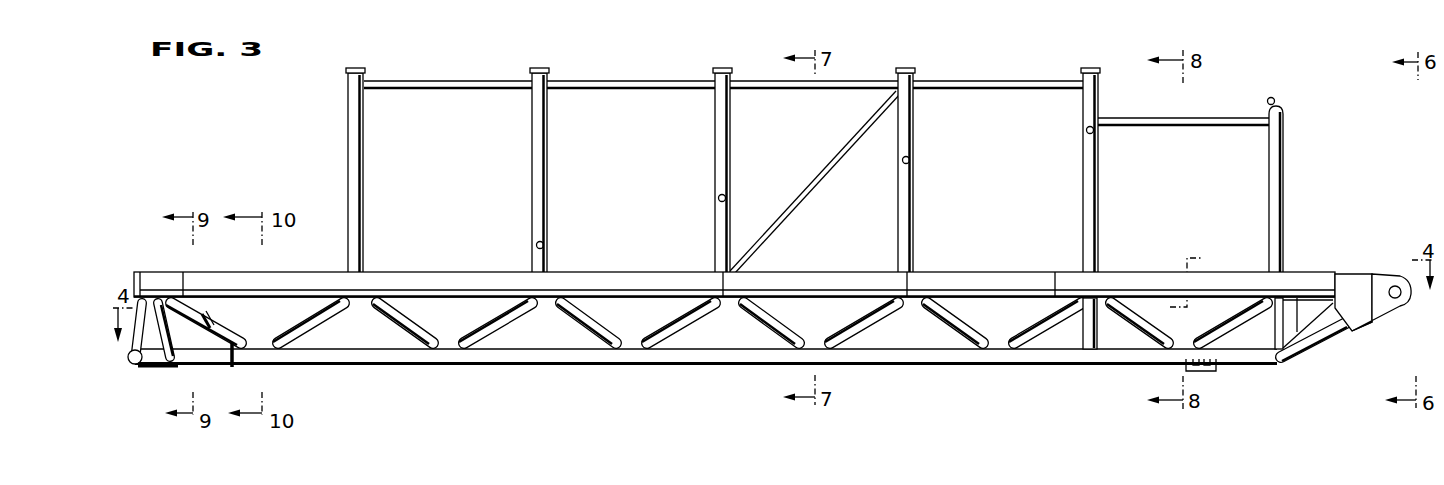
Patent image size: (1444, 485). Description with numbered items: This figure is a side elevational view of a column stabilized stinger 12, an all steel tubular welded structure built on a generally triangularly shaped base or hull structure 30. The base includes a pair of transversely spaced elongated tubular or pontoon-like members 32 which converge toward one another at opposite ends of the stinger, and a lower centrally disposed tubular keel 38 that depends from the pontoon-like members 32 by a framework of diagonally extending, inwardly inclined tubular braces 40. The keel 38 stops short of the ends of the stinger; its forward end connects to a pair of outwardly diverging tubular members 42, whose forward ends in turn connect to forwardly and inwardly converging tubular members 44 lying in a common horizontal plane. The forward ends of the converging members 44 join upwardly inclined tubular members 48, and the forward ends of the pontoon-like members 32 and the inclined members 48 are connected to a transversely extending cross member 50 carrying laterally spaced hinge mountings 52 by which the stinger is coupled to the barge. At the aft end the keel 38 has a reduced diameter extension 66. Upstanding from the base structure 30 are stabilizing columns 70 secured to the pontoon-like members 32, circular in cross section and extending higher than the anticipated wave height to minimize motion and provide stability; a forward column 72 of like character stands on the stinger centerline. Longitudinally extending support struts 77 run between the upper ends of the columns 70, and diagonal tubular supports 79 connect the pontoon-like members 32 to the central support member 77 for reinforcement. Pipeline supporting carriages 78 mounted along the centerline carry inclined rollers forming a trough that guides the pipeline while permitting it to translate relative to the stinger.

The stinger 12 is at (444, 52).
The base or hull structure 30 is at (596, 372).
The elongated tubular or pontoon-like members 32 is at (446, 279).
The tubular keel 38 is at (450, 362).
The tubular braces 40 is at (750, 318).
The outwardly diverging tubular members 42 is at (1112, 358).
The forwardly and inwardly converging tubular members 44 is at (1244, 360).
The upwardly inclined tubular members 48 is at (1309, 352).
The cross member 50 is at (1350, 280).
The hinge mountings 52 is at (1388, 280).
The reduced diameter extension 66 is at (184, 351).
The stabilizing columns 70 is at (532, 148).
The forward column 72 is at (1272, 183).
The longitudinally extending support struts 77 is at (645, 80).
The pipeline supporting carriages 78 is at (1275, 98).
The diagonal tubular supports 79 is at (813, 186).